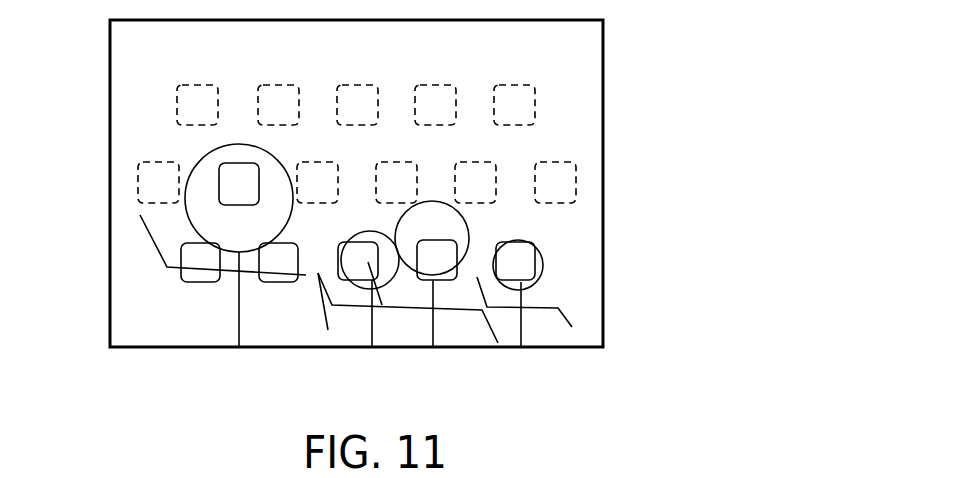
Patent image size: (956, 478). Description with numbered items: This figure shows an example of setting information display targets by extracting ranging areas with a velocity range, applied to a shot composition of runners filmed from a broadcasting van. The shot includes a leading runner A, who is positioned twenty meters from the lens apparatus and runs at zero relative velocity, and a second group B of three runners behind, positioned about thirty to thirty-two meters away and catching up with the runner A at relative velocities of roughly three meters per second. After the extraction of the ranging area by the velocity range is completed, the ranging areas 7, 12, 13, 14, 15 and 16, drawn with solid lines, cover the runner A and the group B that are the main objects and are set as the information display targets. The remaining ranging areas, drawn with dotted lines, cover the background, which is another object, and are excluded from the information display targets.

The runner A is at (205, 153).
The group B is at (483, 240).
The ranging area 7 is at (219, 184).
The ranging area 12 is at (198, 283).
The ranging area 13 is at (280, 283).
The ranging area 14 is at (361, 282).
The ranging area 15 is at (450, 281).
The ranging area 16 is at (545, 267).